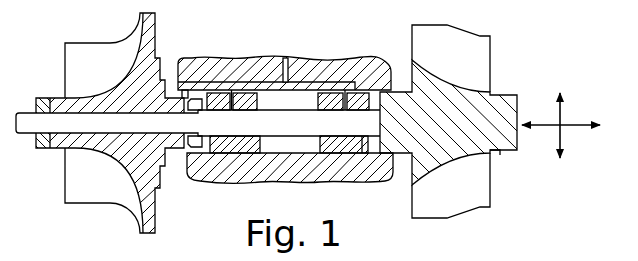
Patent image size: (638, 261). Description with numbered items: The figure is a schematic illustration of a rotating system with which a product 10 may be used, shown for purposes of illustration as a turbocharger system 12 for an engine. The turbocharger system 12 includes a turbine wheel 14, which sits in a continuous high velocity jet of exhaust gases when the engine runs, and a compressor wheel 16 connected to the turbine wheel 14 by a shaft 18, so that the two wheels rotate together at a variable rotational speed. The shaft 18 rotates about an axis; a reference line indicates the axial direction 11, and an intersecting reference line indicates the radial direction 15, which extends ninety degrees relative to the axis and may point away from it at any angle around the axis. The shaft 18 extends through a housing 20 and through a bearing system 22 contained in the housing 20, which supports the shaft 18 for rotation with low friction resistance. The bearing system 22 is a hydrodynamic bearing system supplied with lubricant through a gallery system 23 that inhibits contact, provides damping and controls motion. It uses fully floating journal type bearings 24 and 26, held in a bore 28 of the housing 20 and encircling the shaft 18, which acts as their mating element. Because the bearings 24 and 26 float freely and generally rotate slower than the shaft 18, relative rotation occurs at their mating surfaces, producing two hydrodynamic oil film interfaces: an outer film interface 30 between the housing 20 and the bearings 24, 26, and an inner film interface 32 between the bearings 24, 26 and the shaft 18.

The product 10 is at (329, 68).
The axial direction 11 is at (547, 123).
The turbocharger system 12 is at (501, 157).
The turbine wheel 14 is at (445, 33).
The radial direction 15 is at (562, 133).
The compressor wheel 16 is at (95, 188).
The shaft 18 is at (210, 128).
The housing 20 is at (335, 173).
The bearing system 22 is at (215, 160).
The gallery system 23 is at (284, 64).
The bearing 24 is at (241, 100).
The bearing 26 is at (358, 102).
The bore 28 is at (186, 96).
The outer film interface 30 is at (328, 154).
The inner film interface 32 is at (362, 154).